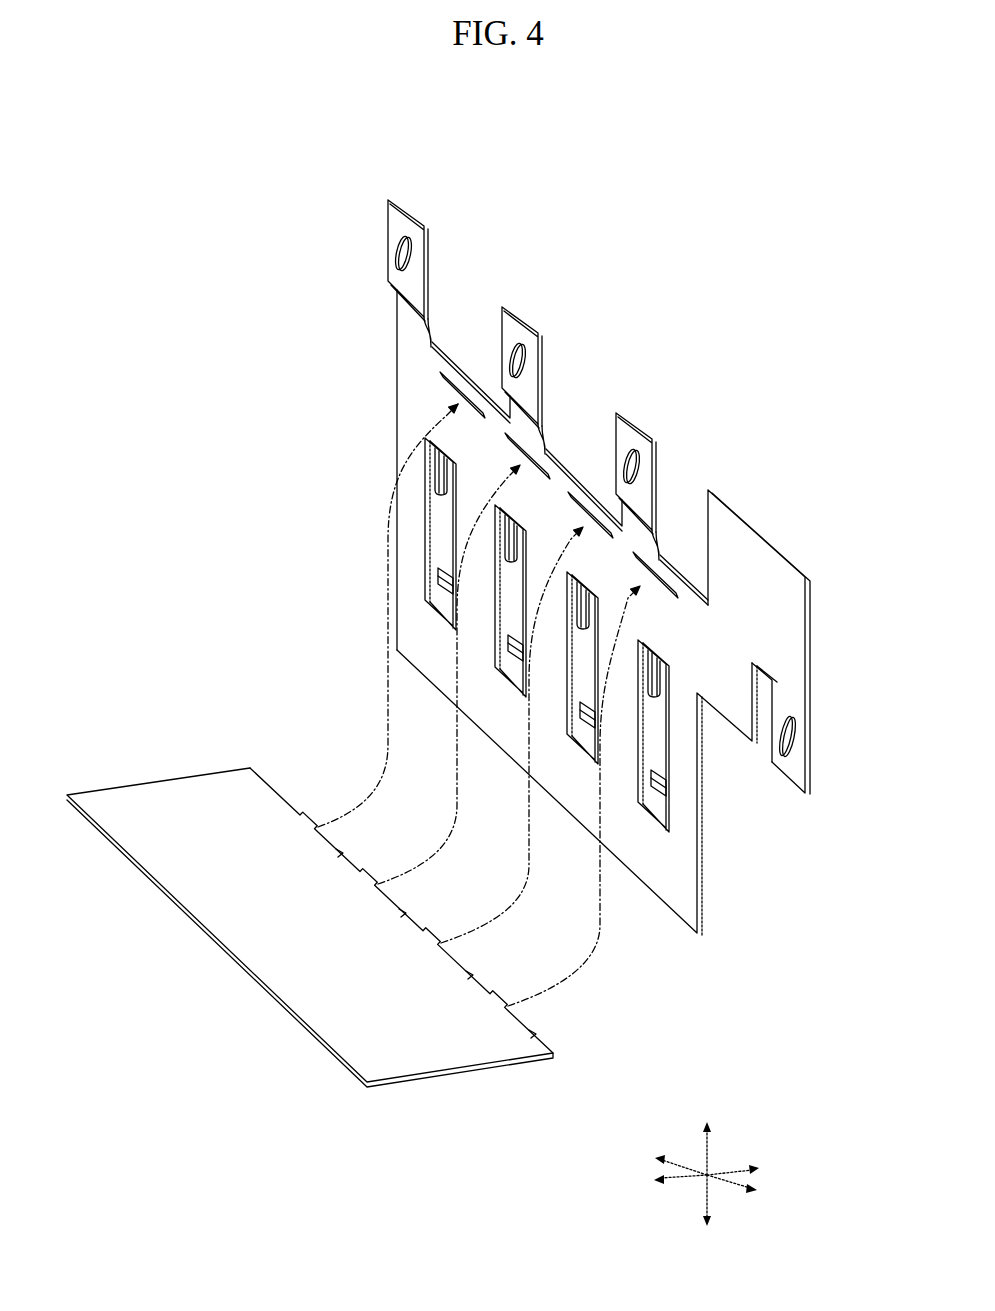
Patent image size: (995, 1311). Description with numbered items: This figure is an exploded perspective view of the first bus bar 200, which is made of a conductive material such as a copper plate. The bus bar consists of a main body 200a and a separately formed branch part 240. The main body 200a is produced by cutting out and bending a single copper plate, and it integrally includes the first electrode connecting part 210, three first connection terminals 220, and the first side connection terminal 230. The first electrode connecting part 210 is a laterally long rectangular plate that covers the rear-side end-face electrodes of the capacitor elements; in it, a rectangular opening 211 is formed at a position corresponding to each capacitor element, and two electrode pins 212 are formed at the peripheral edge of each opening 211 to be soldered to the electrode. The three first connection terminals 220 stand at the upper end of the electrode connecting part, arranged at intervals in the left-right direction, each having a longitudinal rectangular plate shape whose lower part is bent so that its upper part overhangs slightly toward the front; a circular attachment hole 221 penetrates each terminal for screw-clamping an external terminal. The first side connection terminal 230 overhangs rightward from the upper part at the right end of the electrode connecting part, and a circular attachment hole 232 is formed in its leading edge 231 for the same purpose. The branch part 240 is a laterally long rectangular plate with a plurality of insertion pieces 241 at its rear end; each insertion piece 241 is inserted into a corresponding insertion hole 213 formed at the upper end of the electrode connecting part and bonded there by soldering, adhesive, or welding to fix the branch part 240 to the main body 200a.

The first bus bar 200 is at (233, 352).
The main body 200a is at (385, 358).
The first electrode connecting part 210 is at (668, 905).
The opening 211 is at (455, 490).
The electrode pin 212 is at (433, 486).
The insertion hole 213 is at (445, 383).
The first connection terminal 220 is at (408, 212).
The attachment hole 221 is at (396, 244).
The first side connection terminal 230 is at (750, 522).
The leading edge 231 is at (787, 782).
The attachment hole 232 is at (772, 762).
The branch part 240 is at (232, 958).
The insertion piece 241 is at (313, 818).